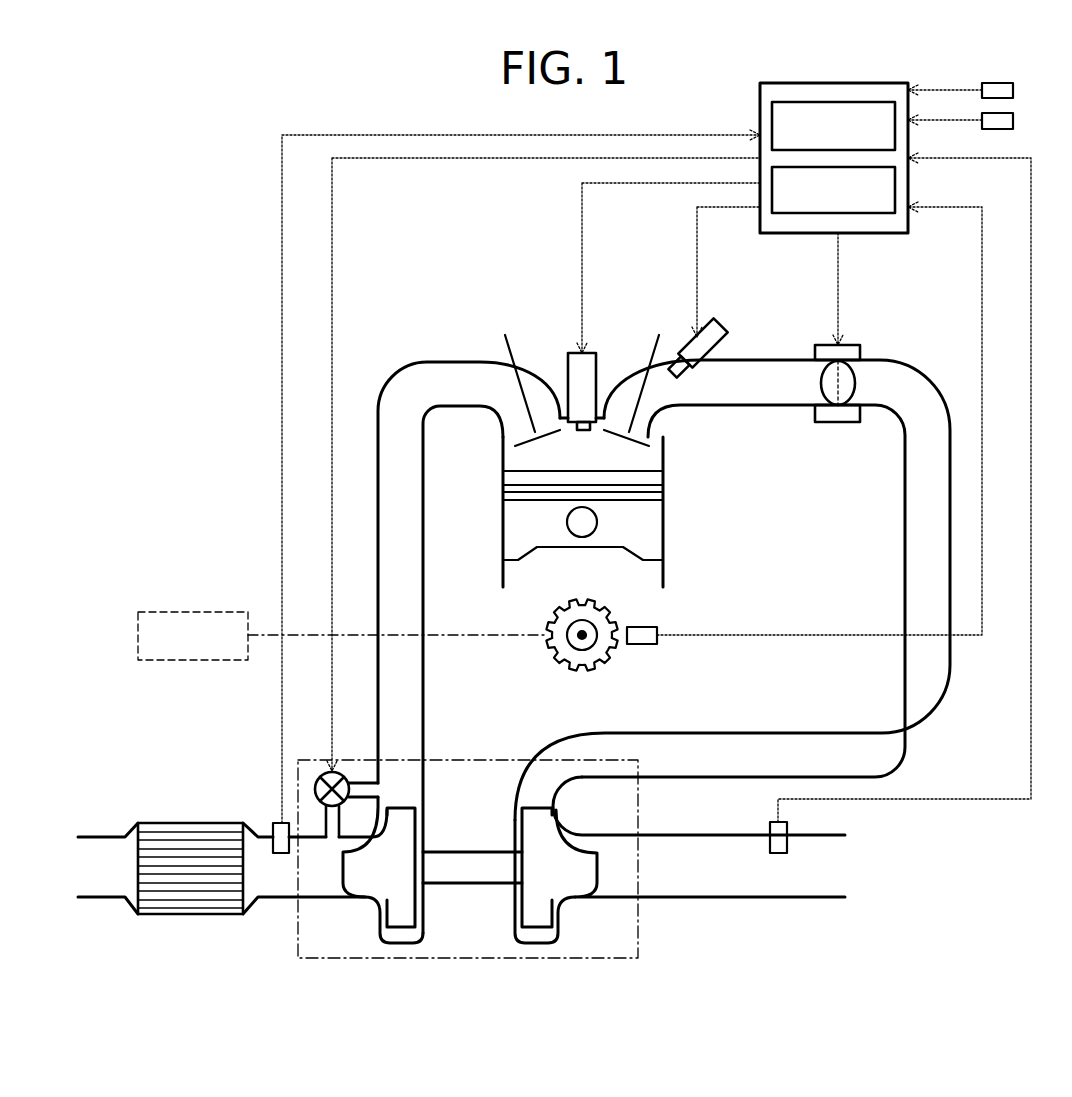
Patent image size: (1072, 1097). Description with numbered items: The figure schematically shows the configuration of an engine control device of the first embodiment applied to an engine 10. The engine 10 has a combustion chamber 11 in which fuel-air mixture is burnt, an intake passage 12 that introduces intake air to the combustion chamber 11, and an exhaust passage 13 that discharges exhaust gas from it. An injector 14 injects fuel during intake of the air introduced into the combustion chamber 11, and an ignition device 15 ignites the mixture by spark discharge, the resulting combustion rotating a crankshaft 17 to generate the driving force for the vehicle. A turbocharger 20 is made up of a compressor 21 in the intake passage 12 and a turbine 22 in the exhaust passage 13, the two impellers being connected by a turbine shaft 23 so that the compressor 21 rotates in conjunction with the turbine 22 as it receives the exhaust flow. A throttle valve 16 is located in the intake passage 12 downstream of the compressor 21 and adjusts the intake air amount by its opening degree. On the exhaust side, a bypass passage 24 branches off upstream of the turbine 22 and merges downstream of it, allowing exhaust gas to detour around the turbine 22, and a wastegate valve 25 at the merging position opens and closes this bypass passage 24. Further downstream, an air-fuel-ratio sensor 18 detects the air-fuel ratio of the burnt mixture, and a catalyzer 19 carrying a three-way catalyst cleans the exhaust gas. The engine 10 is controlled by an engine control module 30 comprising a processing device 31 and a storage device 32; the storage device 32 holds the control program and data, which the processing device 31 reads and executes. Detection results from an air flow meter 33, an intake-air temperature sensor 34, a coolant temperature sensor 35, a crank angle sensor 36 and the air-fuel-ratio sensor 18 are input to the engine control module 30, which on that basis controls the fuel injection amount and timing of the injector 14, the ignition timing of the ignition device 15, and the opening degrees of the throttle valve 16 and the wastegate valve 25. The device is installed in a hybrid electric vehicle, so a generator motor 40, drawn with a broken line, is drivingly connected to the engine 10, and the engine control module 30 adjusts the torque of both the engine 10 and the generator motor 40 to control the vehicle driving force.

The engine 10 is at (413, 308).
The combustion chamber 11 is at (600, 462).
The intake passage 12 is at (906, 595).
The exhaust passage 13 is at (421, 597).
The injector 14 is at (690, 344).
The ignition device 15 is at (594, 368).
The throttle valve 16 is at (853, 383).
The crankshaft 17 is at (565, 645).
The air-fuel-ratio sensor 18 is at (283, 853).
The catalyzer 19 is at (192, 838).
The turbocharger 20 is at (644, 945).
The compressor 21 is at (553, 897).
The turbine 22 is at (380, 900).
The turbine shaft 23 is at (470, 852).
The bypass passage 24 is at (356, 783).
The wastegate valve 25 is at (326, 771).
The engine control module 30 is at (760, 101).
The processing device 31 is at (876, 102).
The storage device 32 is at (876, 213).
The air flow meter 33 is at (770, 848).
The intake-air temperature sensor 34 is at (1013, 90).
The coolant temperature sensor 35 is at (1013, 121).
The crank angle sensor 36 is at (643, 645).
The generator motor 40 is at (198, 662).